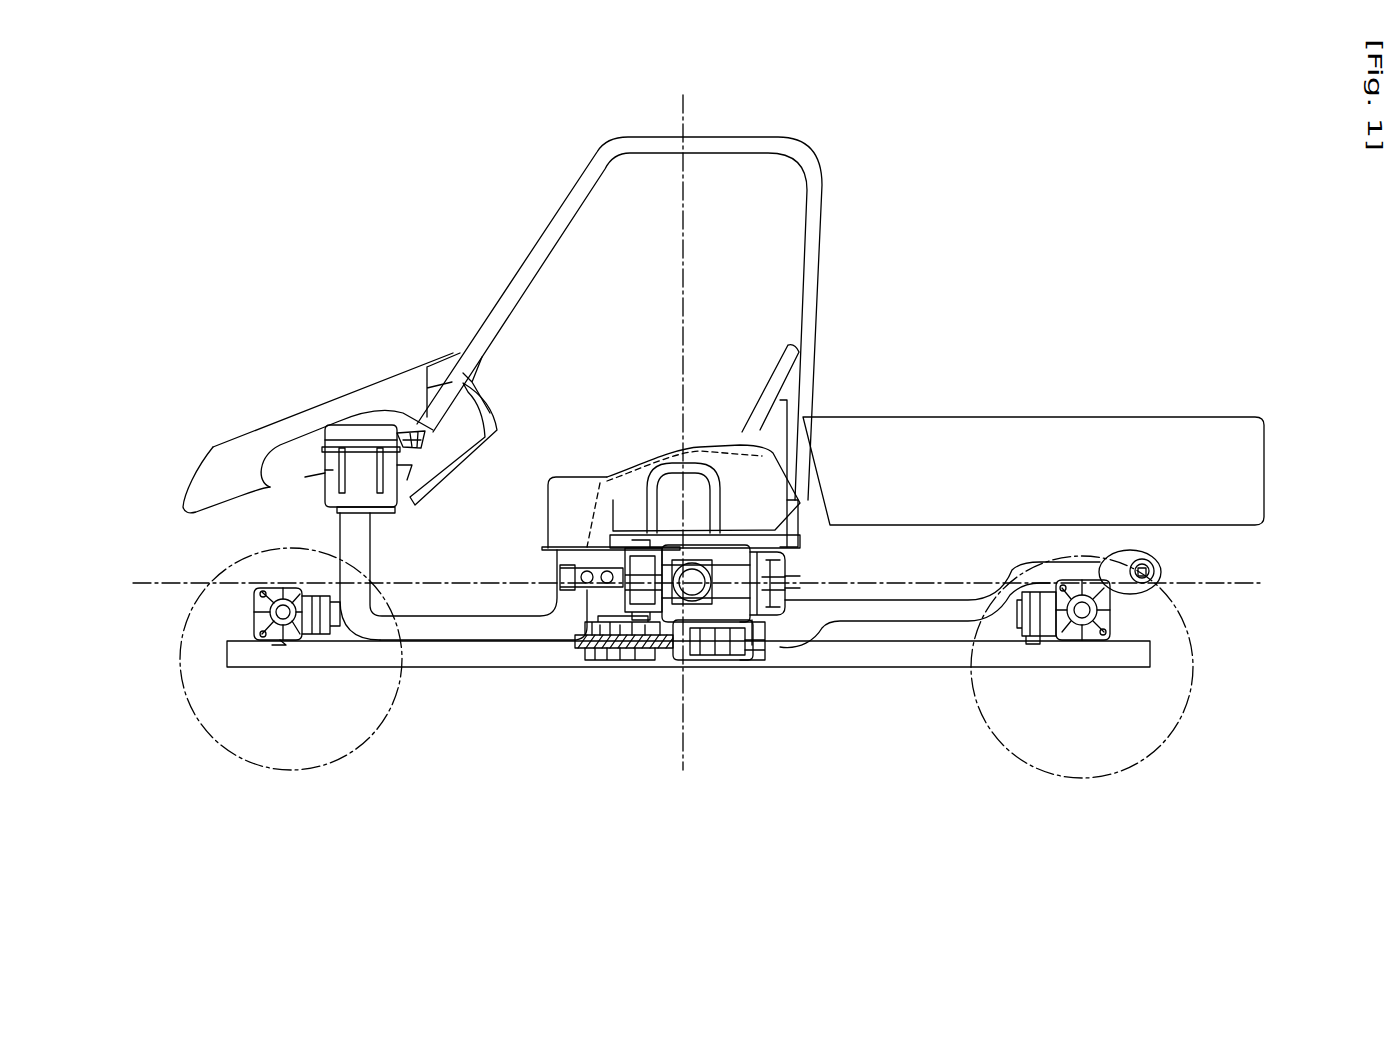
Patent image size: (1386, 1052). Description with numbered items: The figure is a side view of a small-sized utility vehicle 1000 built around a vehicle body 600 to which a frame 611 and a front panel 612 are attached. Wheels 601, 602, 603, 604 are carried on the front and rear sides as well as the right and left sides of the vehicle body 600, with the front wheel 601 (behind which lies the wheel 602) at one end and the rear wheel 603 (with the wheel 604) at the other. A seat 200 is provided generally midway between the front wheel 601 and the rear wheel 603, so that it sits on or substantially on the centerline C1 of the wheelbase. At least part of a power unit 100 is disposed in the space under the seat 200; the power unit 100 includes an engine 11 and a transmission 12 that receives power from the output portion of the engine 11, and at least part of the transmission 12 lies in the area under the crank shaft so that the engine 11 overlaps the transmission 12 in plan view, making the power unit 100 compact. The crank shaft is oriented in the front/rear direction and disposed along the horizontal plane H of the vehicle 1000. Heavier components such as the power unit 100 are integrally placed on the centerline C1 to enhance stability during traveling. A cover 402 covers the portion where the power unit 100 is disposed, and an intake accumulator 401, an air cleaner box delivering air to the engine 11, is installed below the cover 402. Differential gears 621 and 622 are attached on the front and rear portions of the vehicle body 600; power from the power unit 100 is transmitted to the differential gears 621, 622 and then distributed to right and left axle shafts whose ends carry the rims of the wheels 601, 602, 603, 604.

The vehicle 1000 is at (266, 302).
The frame 611 is at (818, 170).
The front panel 612 is at (292, 411).
The seat 200 is at (765, 378).
The cover 402 is at (586, 475).
The intake accumulator 401 is at (593, 513).
The engine 11 is at (808, 569).
The power unit 100 is at (735, 660).
The transmission 12 is at (660, 667).
The vehicle body 600 is at (872, 668).
The differential gear 621 is at (270, 637).
The differential gear 622 is at (1113, 600).
The front wheel 601 is at (343, 758).
The front wheel 602 is at (305, 683).
The rear wheel 603 is at (1013, 765).
The rear wheel 604 is at (1061, 690).
The centerline C1 is at (686, 122).
The horizontal plane H is at (1250, 583).